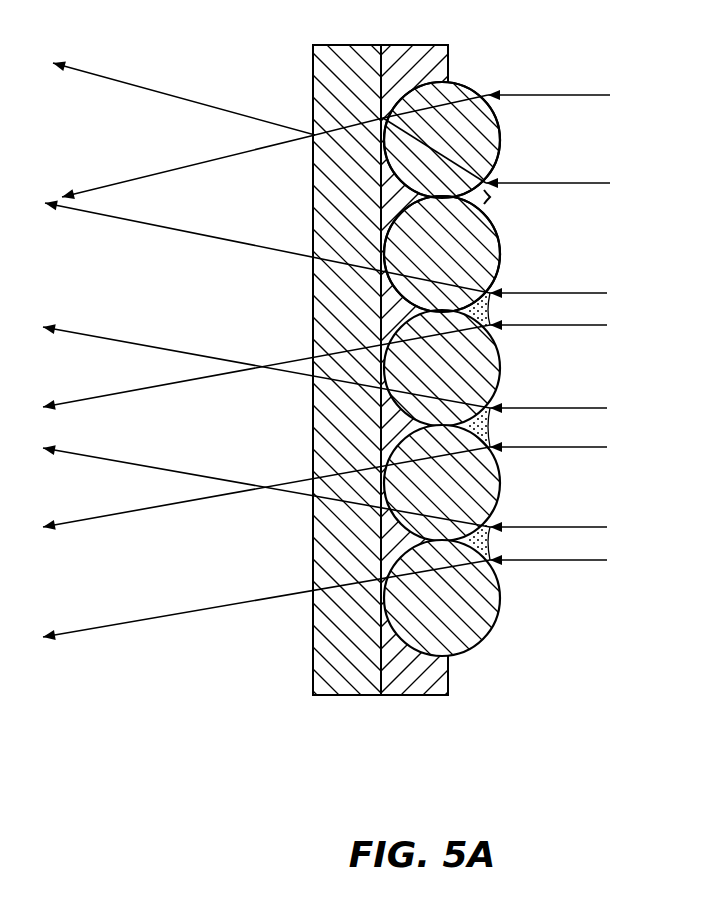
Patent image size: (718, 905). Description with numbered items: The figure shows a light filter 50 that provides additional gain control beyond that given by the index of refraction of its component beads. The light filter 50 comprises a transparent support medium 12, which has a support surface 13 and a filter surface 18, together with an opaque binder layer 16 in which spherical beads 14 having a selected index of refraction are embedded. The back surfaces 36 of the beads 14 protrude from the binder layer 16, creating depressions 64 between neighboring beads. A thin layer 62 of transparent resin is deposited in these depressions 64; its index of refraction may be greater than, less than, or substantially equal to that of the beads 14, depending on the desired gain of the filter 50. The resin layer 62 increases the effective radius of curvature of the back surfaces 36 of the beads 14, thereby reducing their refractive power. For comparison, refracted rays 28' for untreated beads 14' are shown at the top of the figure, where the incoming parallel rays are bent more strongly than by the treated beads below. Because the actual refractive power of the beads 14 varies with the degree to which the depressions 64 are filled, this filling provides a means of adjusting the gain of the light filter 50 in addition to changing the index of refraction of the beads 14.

The transparent support medium 12 is at (347, 718).
The support surface 13 is at (380, 695).
The spherical beads 14 is at (359, 370).
The untreated beads 14' is at (473, 115).
The opaque binder layer 16 is at (422, 695).
The filter surface 18 is at (322, 700).
The refracted rays 28' is at (354, 124).
The back surfaces 36 is at (500, 230).
The light filter 50 is at (653, 238).
The thin layer of transparent resin 62 is at (487, 427).
The depressions 64 is at (492, 195).